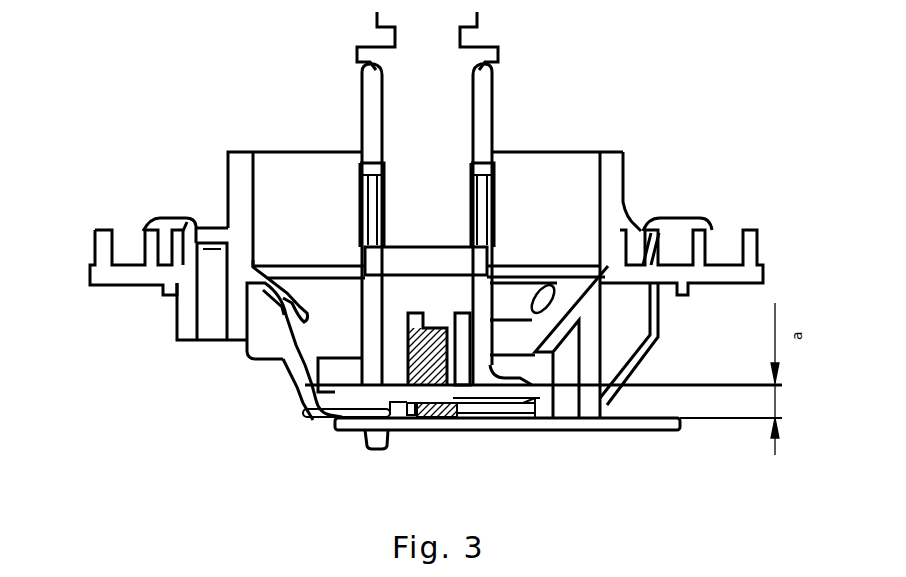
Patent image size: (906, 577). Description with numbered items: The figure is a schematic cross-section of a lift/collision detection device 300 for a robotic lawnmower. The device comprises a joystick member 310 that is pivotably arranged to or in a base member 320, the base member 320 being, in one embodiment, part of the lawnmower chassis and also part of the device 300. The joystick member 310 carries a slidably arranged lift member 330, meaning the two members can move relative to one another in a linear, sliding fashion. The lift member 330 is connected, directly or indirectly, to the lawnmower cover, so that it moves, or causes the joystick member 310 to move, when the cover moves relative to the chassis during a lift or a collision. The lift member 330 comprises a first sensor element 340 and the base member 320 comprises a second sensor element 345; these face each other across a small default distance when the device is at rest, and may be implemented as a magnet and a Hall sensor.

The lift/collision detection device 300 is at (195, 225).
The joystick member 310 is at (494, 102).
The base member 320 is at (177, 343).
The lift member 330 is at (445, 144).
The first sensor element 340 is at (437, 395).
The second sensor element 345 is at (447, 413).